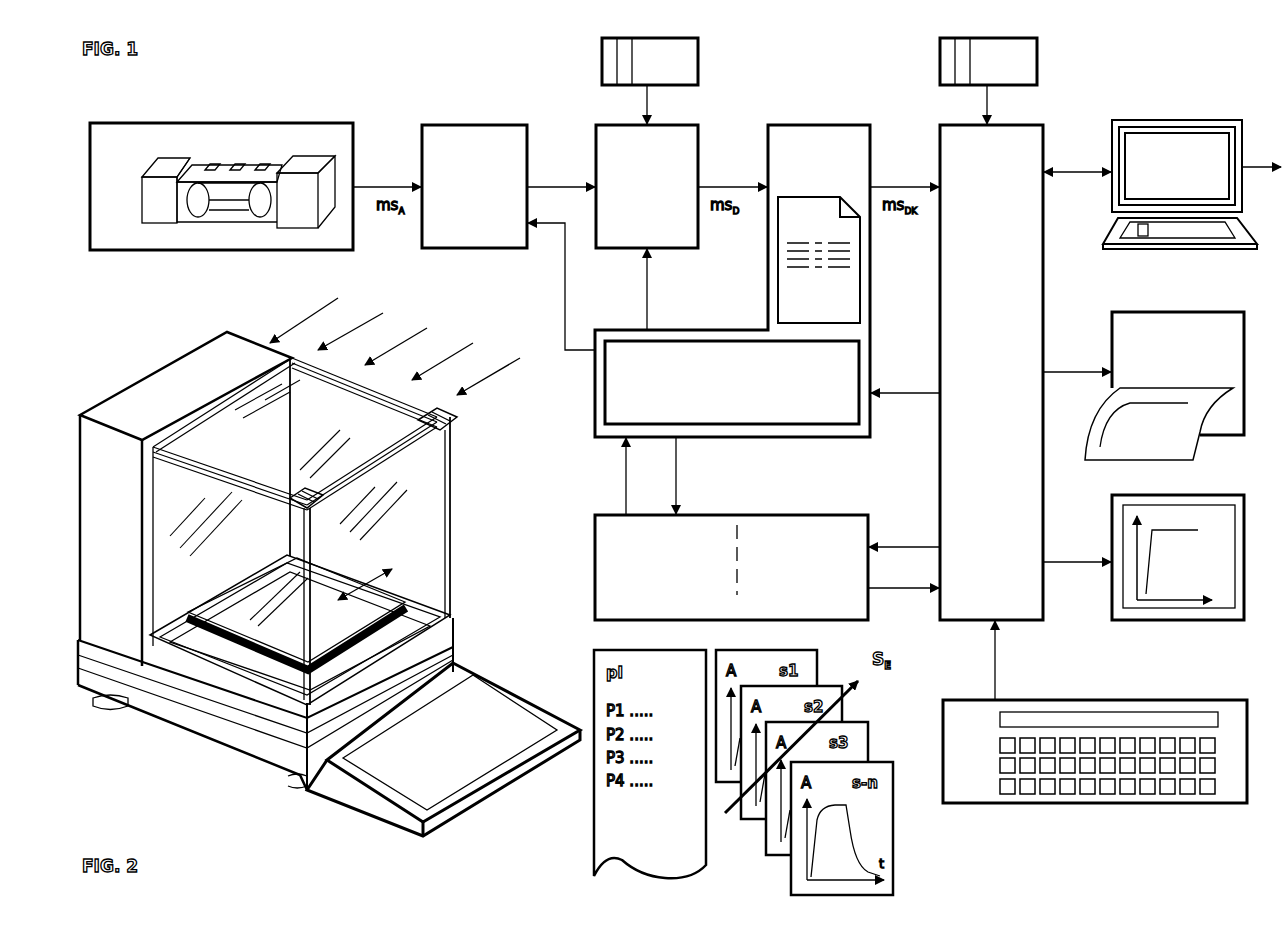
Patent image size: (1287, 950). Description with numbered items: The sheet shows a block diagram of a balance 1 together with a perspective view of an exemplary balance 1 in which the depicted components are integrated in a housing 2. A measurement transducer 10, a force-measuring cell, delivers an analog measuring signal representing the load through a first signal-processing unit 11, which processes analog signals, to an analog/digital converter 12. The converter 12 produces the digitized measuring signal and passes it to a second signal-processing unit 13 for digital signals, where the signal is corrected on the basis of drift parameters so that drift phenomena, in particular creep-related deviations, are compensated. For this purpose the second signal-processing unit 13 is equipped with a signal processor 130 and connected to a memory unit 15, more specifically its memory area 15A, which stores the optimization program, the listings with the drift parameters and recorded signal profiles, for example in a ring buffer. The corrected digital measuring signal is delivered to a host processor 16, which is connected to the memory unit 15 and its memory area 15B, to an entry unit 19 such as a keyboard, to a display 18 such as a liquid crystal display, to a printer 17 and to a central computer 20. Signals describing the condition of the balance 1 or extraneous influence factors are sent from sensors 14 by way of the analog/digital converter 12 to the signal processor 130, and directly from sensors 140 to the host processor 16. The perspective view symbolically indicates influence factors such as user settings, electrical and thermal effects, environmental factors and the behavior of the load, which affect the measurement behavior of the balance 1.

In FIG. 2, the balance 1 is at (118, 362).
In FIG. 2, the housing 2 is at (190, 725).
In FIG. 1, the measurement transducer 10 is at (221, 186).
In FIG. 1, the first signal-processing unit 11 is at (474, 186).
In FIG. 1, the analog/digital converter 12 is at (647, 186).
In FIG. 1, the second signal-processing unit 13 is at (732, 281).
In FIG. 1, the sensors 14 is at (650, 61).
In FIG. 1, the sensors 140 is at (988, 61).
In FIG. 1, the memory unit 15 is at (703, 548).
In FIG. 1, the memory area 15A is at (671, 560).
In FIG. 1, the memory area 15B is at (762, 539).
In FIG. 1, the signal processor 130 is at (732, 382).
In FIG. 1, the host processor 16 is at (991, 372).
In FIG. 1, the printer 17 is at (1164, 386).
In FIG. 1, the display 18 is at (1178, 557).
In FIG. 2, the display 18 is at (165, 487).
In FIG. 1, the entry unit 19 is at (1095, 751).
In FIG. 2, the entry unit 19 is at (477, 723).
In FIG. 1, the central computer 20 is at (1180, 184).